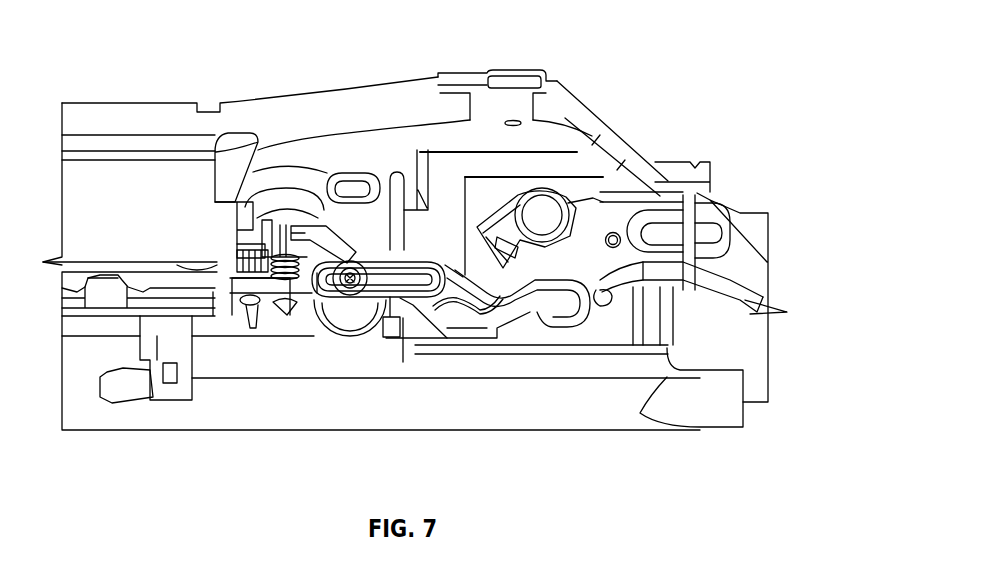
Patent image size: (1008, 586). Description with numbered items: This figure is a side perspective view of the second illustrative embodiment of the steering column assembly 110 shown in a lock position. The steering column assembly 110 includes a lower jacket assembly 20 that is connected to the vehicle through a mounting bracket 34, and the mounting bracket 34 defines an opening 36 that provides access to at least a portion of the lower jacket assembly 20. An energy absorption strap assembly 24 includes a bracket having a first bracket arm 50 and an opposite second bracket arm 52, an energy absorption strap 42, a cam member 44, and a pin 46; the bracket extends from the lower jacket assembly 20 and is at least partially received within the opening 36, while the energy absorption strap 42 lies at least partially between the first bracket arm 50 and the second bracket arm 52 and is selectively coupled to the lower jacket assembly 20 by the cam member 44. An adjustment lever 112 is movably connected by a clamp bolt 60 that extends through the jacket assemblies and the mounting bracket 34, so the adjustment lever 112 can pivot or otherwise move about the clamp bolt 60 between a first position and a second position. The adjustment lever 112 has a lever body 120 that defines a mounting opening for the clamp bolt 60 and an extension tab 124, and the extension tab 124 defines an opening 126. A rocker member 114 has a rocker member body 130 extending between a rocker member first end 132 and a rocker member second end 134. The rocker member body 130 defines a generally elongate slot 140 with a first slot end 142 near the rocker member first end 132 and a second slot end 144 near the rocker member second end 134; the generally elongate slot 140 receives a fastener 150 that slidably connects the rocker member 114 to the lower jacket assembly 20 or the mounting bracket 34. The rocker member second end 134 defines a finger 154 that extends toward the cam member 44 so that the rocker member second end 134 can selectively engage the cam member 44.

The steering column assembly 110 is at (695, 32).
The mounting bracket 34 is at (397, 93).
The opening 36 is at (415, 152).
The lever body 120 is at (597, 213).
The clamp bolt 60 is at (543, 212).
The adjustment lever 112 is at (727, 200).
The lower jacket assembly 20 is at (171, 430).
The energy absorption strap 42 is at (135, 281).
The energy absorption strap assembly 24 is at (243, 241).
The cam member 44 is at (236, 254).
The first bracket arm 50 is at (250, 300).
The pin 46 is at (287, 315).
The fastener 150 is at (340, 288).
The second bracket arm 52 is at (287, 200).
The finger 154 is at (317, 213).
The rocker member second end 134 is at (343, 236).
The second slot end 144 is at (373, 260).
The rocker member 114 is at (348, 292).
The generally elongate slot 140 is at (351, 314).
The rocker member body 130 is at (375, 302).
The first slot end 142 is at (410, 303).
The rocker member first end 132 is at (540, 312).
The opening 126 is at (570, 328).
The extension tab 124 is at (603, 296).